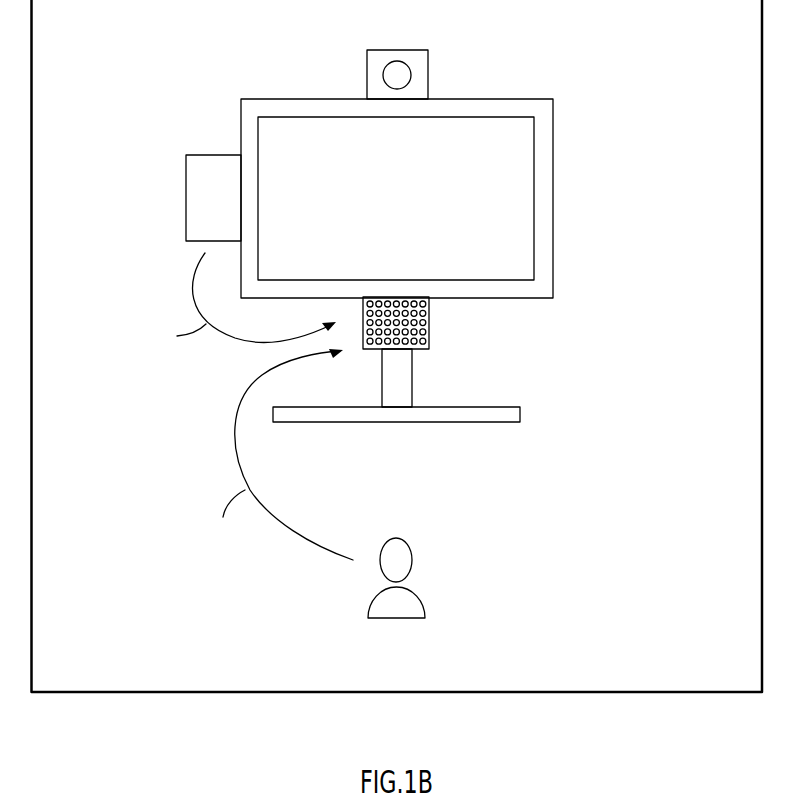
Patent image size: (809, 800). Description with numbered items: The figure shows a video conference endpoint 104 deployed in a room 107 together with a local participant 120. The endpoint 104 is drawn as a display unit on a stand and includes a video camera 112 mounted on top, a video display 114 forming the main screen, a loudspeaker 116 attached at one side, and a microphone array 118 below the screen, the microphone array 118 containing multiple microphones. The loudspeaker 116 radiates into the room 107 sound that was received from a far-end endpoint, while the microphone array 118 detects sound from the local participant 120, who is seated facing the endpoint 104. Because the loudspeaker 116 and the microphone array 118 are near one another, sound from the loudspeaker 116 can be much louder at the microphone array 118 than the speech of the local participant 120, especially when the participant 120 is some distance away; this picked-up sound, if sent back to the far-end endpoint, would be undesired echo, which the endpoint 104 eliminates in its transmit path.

The endpoint 104 is at (184, 65).
The room 107 is at (694, 52).
The video camera 112 is at (367, 77).
The video display 114 is at (522, 195).
The loudspeaker 116 is at (186, 197).
The microphone array 118 is at (430, 322).
The local participant 120 is at (396, 622).